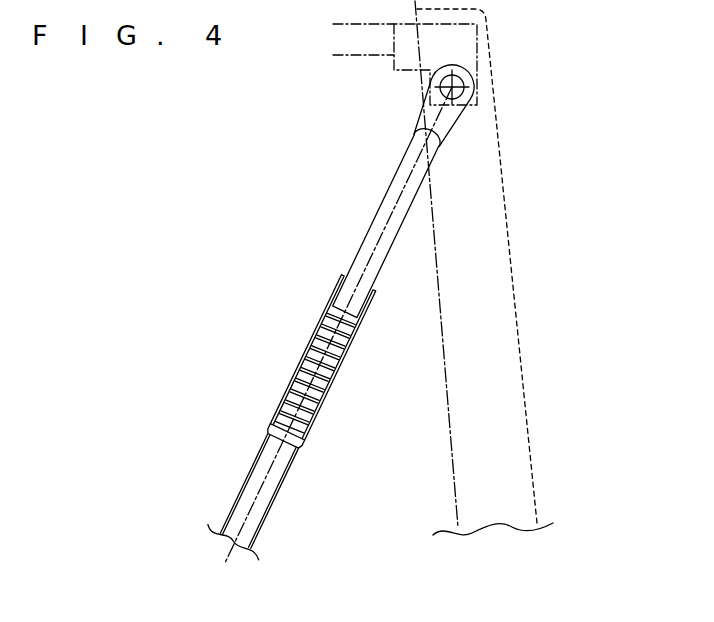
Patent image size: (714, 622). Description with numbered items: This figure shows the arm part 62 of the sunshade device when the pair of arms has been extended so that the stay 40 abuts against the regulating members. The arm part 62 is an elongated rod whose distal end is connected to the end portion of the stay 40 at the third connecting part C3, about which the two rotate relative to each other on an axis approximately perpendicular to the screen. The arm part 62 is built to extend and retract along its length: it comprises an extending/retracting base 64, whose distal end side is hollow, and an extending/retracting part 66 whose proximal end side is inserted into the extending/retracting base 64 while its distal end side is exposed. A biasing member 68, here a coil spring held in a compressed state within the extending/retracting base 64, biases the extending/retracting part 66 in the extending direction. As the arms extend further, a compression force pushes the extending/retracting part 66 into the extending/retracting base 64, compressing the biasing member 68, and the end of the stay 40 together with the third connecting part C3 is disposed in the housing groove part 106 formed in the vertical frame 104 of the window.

The stay 40 is at (352, 57).
The third connecting part C3 is at (461, 71).
The arm part 62 is at (302, 294).
The extending/retracting part 66 is at (373, 219).
The biasing member 68 is at (348, 351).
The extending/retracting base 64 is at (278, 410).
The vertical frame 104 is at (455, 463).
The housing groove part 106 is at (516, 306).